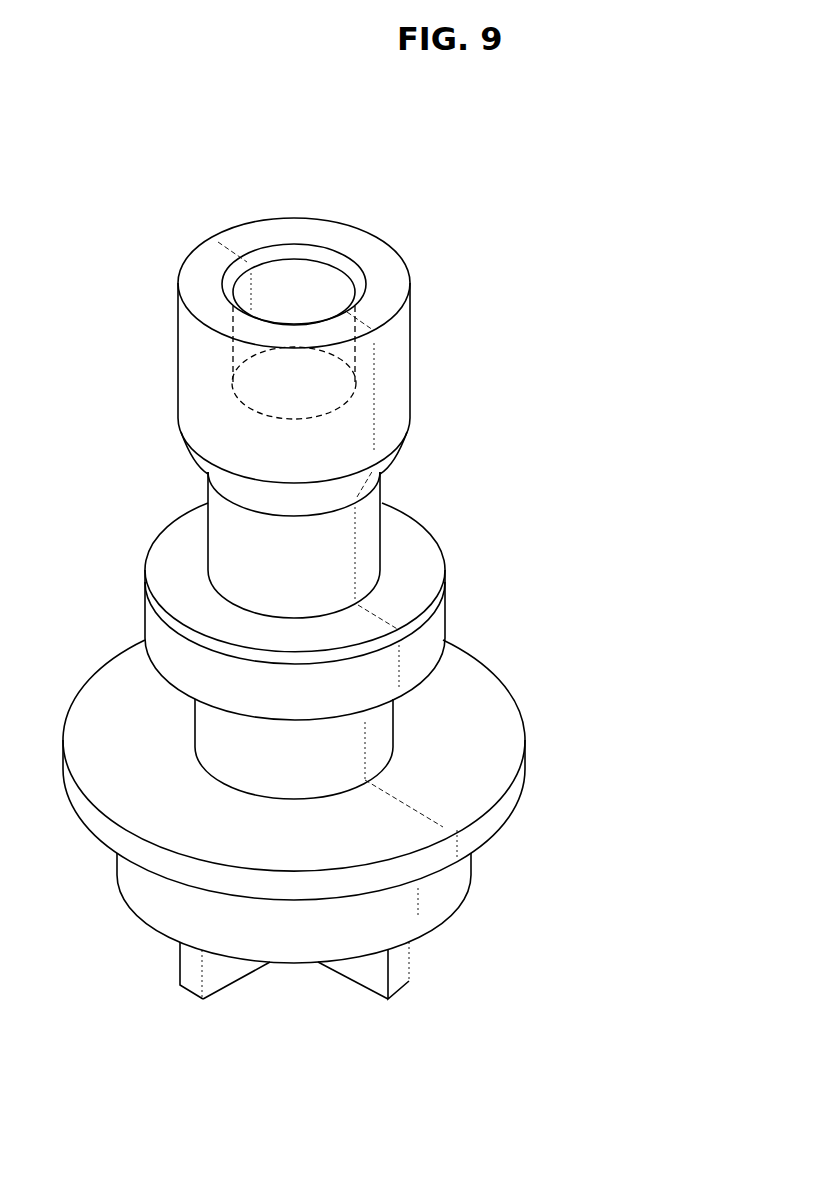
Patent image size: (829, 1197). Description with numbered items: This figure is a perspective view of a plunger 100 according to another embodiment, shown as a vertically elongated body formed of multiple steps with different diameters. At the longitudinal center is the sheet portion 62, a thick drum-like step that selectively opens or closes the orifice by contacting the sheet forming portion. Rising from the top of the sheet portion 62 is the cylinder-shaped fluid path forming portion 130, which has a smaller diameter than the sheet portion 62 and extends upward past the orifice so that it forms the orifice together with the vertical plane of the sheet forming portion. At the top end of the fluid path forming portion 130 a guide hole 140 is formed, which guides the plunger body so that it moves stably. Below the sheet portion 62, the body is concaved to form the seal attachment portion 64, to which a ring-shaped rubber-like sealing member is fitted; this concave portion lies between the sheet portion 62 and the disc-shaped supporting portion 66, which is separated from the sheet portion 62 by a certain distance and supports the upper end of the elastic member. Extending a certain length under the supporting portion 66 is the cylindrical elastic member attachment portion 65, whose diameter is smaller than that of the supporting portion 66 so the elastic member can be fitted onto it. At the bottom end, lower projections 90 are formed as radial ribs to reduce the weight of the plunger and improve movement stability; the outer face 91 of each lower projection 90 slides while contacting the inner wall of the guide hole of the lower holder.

The plunger 100 is at (320, 152).
The guide hole 140 is at (300, 288).
The fluid path forming portion 130 is at (367, 542).
The sheet portion 62 is at (432, 632).
The seal attachment portion 64 is at (378, 735).
The supporting portion 66 is at (497, 818).
The elastic member attachment portion 65 is at (442, 898).
The lower projection 90 is at (346, 988).
The outer face 91 is at (398, 965).